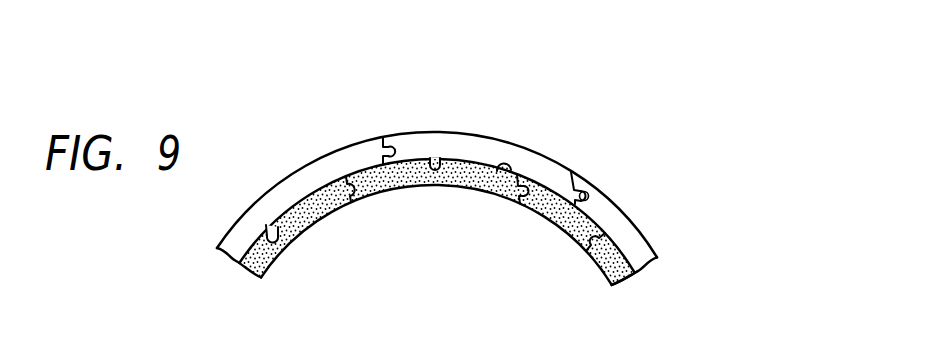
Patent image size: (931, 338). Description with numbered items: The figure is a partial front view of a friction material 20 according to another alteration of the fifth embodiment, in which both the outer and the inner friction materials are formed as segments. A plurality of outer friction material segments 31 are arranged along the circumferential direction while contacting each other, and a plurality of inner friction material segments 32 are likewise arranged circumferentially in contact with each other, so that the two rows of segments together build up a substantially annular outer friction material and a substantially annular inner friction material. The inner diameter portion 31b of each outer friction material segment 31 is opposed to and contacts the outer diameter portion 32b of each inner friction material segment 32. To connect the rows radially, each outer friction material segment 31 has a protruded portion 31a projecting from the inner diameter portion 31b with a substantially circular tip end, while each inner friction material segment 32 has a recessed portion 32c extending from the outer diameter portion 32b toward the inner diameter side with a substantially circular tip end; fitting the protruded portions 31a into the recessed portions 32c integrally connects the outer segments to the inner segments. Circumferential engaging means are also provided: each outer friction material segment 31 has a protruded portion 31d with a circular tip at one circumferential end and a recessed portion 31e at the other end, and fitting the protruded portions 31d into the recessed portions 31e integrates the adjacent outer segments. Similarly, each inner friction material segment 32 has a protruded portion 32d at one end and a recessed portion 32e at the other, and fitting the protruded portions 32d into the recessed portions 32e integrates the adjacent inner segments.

The friction material 20 is at (661, 154).
The outer friction material segment 31 is at (526, 160).
The protruded portion 31a is at (600, 262).
The inner diameter portion 31b is at (457, 168).
The protruded portion 31d is at (579, 196).
The recessed portion 31e is at (586, 197).
The inner friction material segment 32 is at (414, 186).
The outer diameter portion 32b is at (502, 172).
The recessed portion 32c is at (592, 240).
The protruded portion 32d is at (351, 204).
The recessed portion 32e is at (353, 187).